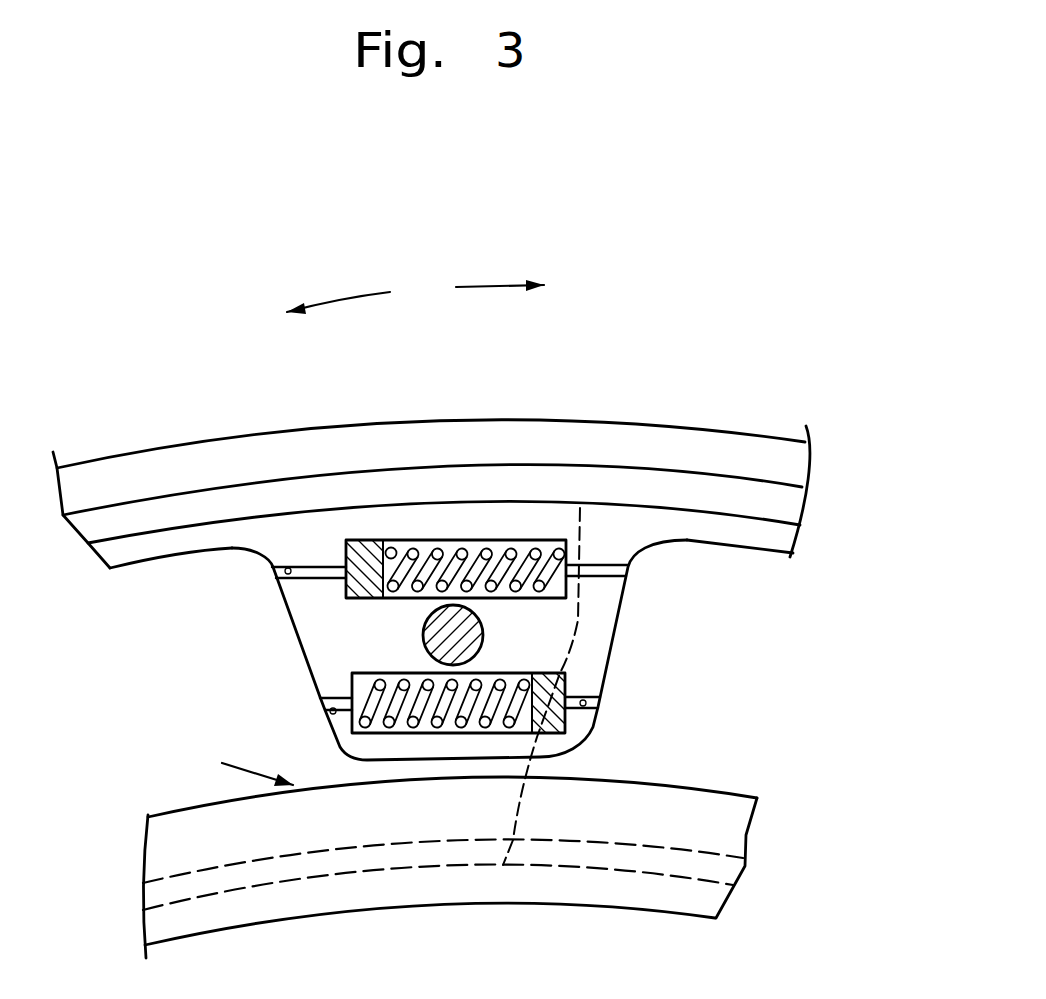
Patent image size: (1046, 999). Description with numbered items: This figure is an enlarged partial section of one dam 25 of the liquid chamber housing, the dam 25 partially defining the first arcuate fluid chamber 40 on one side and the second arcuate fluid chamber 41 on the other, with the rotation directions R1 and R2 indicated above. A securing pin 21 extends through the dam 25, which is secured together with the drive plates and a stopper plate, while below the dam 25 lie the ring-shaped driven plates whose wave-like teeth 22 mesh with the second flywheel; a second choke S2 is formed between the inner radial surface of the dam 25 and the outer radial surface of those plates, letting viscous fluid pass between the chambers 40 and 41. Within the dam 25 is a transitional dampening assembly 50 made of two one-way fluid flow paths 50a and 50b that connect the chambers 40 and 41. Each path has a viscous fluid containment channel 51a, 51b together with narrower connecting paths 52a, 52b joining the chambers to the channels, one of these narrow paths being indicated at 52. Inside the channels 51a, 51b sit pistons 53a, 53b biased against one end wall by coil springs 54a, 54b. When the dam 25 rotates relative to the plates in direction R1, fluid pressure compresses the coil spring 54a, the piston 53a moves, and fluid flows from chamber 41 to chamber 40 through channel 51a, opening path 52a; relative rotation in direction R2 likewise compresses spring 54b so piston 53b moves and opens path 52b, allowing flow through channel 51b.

The securing pin 21 is at (470, 632).
The wave-like teeth 22 is at (660, 827).
The dam 25 is at (323, 635).
The first arcuate fluid chamber 40 is at (773, 630).
The second arcuate fluid chamber 41 is at (204, 700).
The transitional dampening assembly 50 is at (600, 493).
The first one-way fluid flow path 50a is at (560, 525).
The second one-way fluid flow path 50b is at (533, 668).
The first viscous fluid containment channel 51a is at (473, 540).
The second viscous fluid containment channel 51b is at (422, 733).
The spring seat 52 is at (590, 707).
The first connecting path 52a is at (287, 566).
The second connecting path 52b is at (345, 735).
The first piston 53a is at (369, 560).
The second piston 53b is at (537, 733).
The first coil spring 54a is at (513, 548).
The second coil spring 54b is at (470, 733).
The first rotation direction R1 is at (321, 281).
The second rotation direction R2 is at (529, 272).
The second choke S2 is at (234, 760).